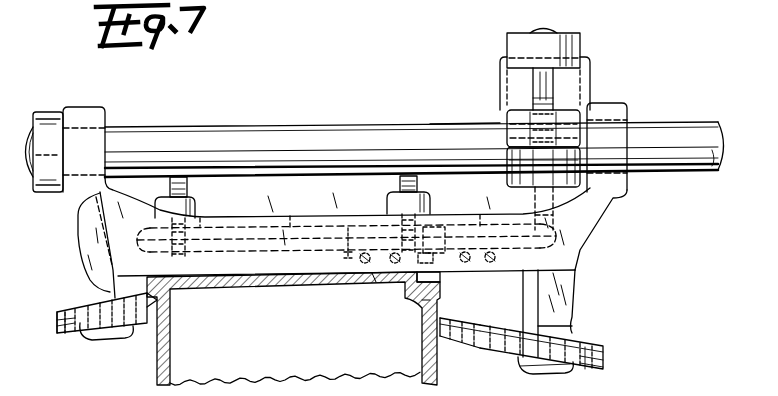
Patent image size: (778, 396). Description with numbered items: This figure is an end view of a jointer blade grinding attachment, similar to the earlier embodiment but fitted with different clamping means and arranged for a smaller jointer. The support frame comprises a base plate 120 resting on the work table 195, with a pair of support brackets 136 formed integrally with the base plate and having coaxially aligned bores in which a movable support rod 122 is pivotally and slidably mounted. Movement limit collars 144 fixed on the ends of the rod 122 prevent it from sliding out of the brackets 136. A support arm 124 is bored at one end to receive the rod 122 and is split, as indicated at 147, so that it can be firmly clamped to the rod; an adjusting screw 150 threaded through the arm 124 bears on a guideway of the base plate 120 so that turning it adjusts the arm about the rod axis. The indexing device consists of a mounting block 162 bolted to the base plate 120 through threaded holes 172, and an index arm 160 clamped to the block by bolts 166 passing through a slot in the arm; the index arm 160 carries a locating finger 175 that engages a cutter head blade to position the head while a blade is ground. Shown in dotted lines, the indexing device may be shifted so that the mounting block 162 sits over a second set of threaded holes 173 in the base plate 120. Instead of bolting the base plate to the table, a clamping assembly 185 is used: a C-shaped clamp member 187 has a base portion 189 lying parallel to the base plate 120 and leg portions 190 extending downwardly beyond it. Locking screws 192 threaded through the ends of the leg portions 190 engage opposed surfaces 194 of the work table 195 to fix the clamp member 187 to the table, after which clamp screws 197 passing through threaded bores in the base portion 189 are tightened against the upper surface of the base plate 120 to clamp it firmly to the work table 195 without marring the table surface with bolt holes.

The base plate 120 is at (240, 283).
The support rod 122 is at (668, 160).
The support arm 124 is at (498, 125).
The support brackets 136 is at (104, 124).
The movement limit collars 144 is at (52, 193).
The split 147 is at (570, 141).
The adjusting screw 150 is at (582, 43).
The index arm 160 is at (450, 280).
The mounting block 162 is at (357, 260).
The bolts 166 is at (445, 278).
The threaded holes 172 is at (480, 265).
The second set of threaded holes 173 is at (378, 285).
The locating finger 175 is at (416, 299).
The clamping assembly 185 is at (586, 272).
The C-shaped clamp member 187 is at (567, 300).
The base portion 189 is at (325, 213).
The leg portions 190 is at (562, 315).
The locking screws 192 is at (593, 345).
The opposed surfaces 194 is at (444, 365).
The work table 195 is at (312, 287).
The clamp screws 197 is at (194, 196).